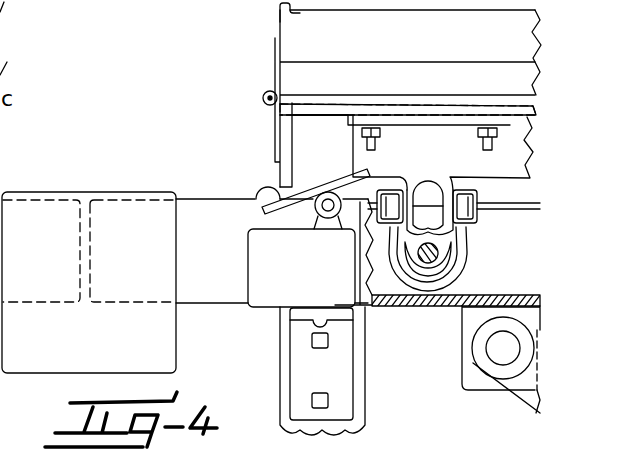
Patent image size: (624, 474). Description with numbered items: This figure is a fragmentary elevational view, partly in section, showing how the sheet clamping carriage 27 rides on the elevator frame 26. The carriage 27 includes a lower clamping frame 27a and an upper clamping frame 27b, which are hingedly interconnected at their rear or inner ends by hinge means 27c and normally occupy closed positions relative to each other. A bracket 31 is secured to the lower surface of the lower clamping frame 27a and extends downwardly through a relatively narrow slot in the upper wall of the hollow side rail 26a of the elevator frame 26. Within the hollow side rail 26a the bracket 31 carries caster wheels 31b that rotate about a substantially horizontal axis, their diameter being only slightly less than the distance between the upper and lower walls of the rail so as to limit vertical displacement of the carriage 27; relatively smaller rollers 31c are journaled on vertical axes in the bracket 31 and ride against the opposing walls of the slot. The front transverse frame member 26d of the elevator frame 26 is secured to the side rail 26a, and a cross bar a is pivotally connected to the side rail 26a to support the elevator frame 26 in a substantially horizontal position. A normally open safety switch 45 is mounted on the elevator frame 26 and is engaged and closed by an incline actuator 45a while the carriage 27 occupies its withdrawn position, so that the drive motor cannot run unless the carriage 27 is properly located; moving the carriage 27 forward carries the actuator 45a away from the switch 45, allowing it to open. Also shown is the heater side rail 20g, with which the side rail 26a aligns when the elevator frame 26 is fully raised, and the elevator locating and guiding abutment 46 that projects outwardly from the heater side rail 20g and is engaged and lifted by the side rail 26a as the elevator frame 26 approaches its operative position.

The carriage 27 is at (262, 26).
The upper clamping frame 27b is at (280, 8).
The lower clamping frame 27a is at (393, 110).
The hinge means 27c is at (263, 98).
The side rail 26a is at (208, 200).
The incline actuator 45a is at (264, 210).
The safety switch 45 is at (314, 268).
The elevator locating and guiding abutment 46 is at (164, 338).
The heater side rail 20g is at (0, 177).
The bracket 31 is at (445, 156).
The rollers 31c is at (476, 212).
The caster wheels 31b is at (457, 270).
The elevator frame 26 is at (424, 321).
The cross bar a is at (530, 397).
The front transverse frame member 26d is at (357, 396).